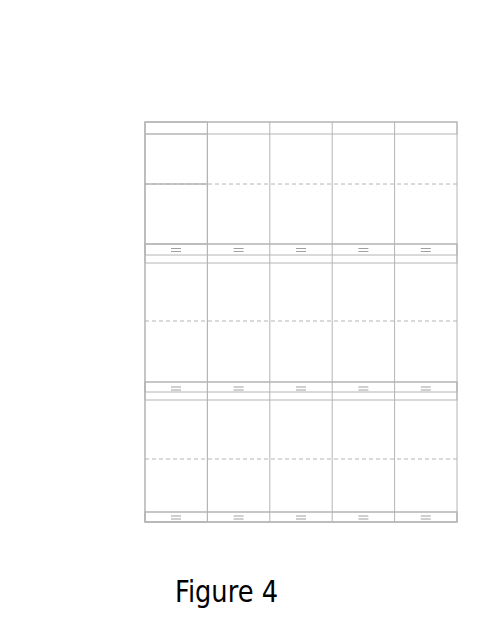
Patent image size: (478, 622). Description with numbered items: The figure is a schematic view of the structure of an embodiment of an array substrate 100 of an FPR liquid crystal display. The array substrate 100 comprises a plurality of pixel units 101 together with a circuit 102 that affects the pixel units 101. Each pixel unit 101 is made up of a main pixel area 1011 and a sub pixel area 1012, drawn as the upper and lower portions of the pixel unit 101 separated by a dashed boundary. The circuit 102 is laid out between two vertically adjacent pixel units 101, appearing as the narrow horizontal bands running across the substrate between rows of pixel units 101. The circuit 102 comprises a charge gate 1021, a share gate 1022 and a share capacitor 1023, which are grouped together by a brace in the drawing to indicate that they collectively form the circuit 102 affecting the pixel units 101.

The array substrate 100 is at (281, 77).
The pixel unit 101 is at (167, 143).
The main pixel area 1011 is at (180, 142).
The sub pixel area 1012 is at (195, 202).
The circuit 102 is at (85, 147).
The charge gate 1021 is at (150, 134).
The share gate 1022 is at (168, 244).
The share capacitor 1023 is at (178, 249).